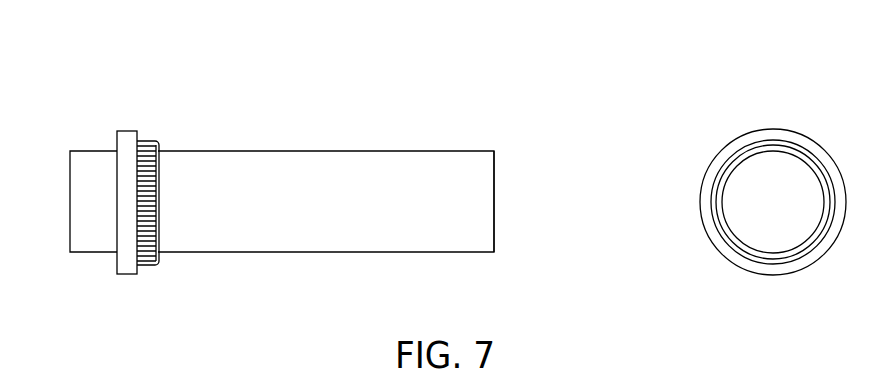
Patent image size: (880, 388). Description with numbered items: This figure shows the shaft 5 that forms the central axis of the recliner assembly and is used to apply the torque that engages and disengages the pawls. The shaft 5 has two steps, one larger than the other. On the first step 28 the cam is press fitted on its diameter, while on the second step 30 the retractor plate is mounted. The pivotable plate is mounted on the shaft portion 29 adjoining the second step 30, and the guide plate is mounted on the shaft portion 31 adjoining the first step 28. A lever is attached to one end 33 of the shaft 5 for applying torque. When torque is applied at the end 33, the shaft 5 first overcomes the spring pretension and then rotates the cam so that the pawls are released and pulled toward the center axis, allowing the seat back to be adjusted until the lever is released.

The shaft 5 is at (330, 162).
The first step 28 is at (190, 177).
The shaft portion 29 is at (97, 151).
The second step 30 is at (128, 131).
The shaft portion 31 is at (162, 252).
The end of the shaft 33 is at (494, 252).